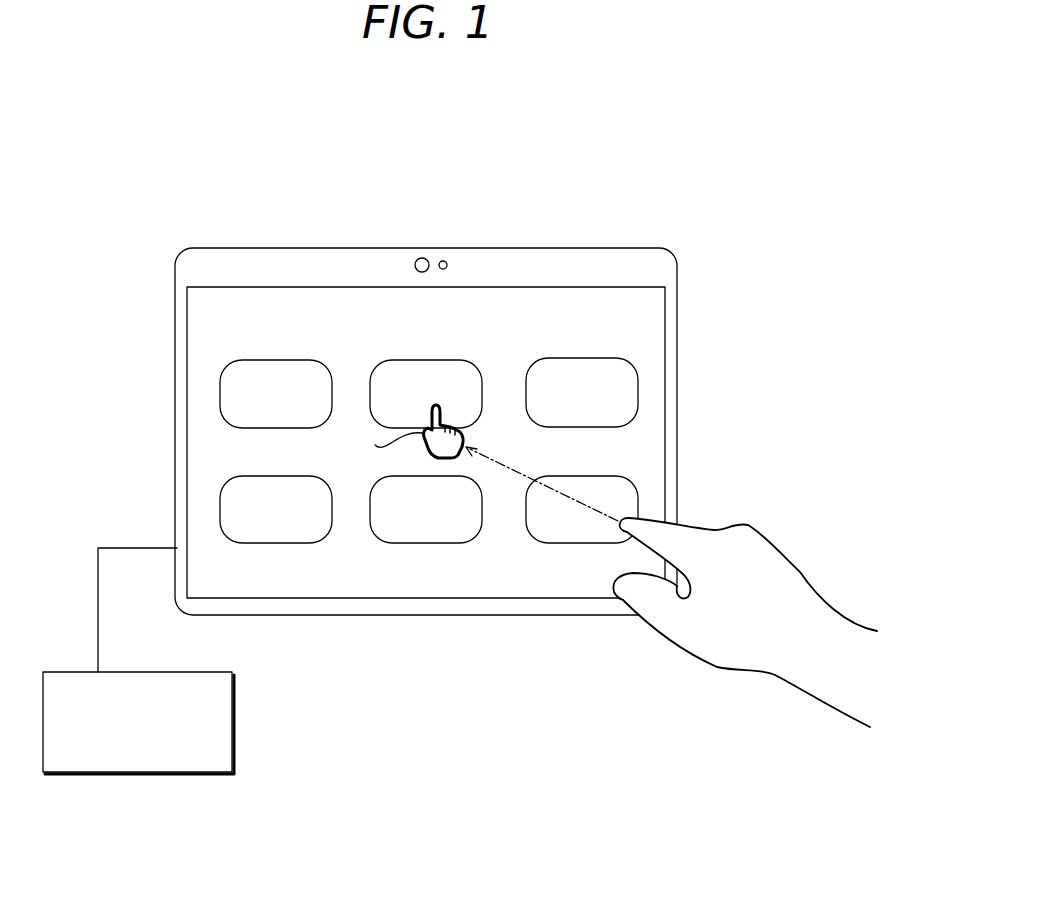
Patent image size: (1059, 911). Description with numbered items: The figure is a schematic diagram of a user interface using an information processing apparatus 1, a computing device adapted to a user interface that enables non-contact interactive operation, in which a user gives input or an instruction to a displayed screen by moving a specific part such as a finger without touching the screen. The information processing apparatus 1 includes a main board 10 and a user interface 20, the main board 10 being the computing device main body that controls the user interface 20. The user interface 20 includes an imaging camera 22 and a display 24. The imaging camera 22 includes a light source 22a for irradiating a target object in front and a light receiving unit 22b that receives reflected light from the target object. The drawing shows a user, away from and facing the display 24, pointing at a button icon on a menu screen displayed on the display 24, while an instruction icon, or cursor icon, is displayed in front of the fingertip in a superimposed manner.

The information processing apparatus 1 is at (395, 516).
The main board 10 is at (232, 718).
The user interface 20 is at (446, 383).
The imaging camera 22 is at (456, 229).
The light source 22a is at (448, 258).
The light receiving unit 22b is at (424, 257).
The display 24 is at (303, 318).